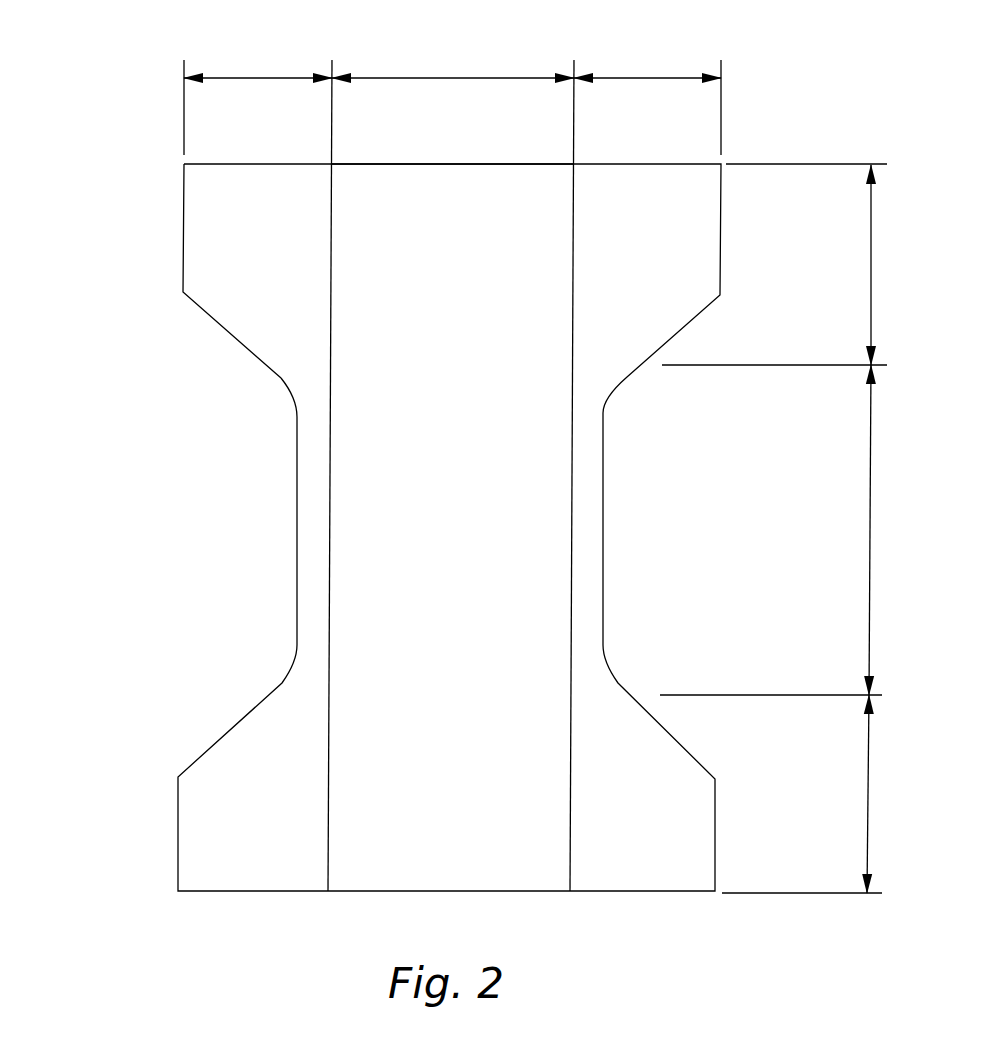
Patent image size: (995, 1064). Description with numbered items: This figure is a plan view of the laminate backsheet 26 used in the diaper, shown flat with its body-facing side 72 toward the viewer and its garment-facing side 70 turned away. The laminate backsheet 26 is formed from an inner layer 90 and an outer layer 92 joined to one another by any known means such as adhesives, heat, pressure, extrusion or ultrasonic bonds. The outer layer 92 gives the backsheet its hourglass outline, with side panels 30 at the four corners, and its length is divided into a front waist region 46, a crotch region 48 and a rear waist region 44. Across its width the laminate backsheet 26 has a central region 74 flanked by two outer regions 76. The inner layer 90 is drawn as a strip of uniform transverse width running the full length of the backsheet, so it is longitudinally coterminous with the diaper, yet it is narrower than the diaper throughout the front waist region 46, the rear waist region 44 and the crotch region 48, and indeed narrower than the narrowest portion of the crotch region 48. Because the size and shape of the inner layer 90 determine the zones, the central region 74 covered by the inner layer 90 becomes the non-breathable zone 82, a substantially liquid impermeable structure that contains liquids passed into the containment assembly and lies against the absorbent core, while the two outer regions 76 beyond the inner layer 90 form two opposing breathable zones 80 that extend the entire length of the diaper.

The laminate backsheet 26 is at (140, 152).
The side panels 30 is at (226, 217).
The rear waist region 44 is at (867, 797).
The front waist region 46 is at (871, 265).
The crotch region 48 is at (870, 530).
The garment-facing side 70 is at (370, 530).
The body-facing side 72 is at (400, 600).
The central region 74 is at (453, 77).
The outer regions 76 is at (260, 77).
The breathable zones 80 is at (650, 77).
The non-breathable zone 82 is at (453, 88).
The inner layer 90 is at (400, 478).
The outer layer 92 is at (247, 321).